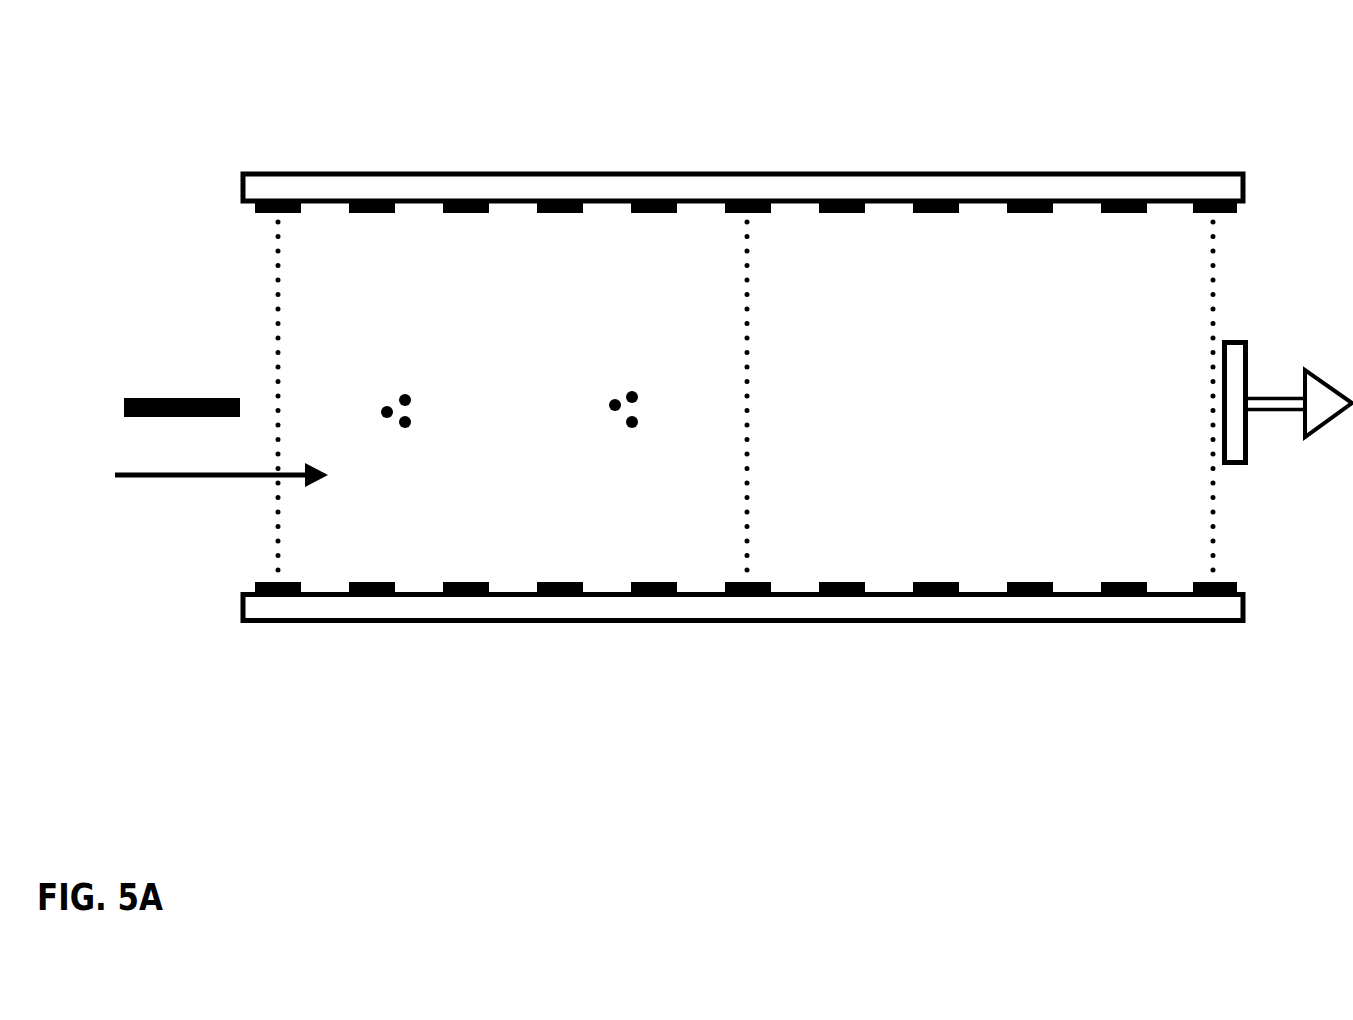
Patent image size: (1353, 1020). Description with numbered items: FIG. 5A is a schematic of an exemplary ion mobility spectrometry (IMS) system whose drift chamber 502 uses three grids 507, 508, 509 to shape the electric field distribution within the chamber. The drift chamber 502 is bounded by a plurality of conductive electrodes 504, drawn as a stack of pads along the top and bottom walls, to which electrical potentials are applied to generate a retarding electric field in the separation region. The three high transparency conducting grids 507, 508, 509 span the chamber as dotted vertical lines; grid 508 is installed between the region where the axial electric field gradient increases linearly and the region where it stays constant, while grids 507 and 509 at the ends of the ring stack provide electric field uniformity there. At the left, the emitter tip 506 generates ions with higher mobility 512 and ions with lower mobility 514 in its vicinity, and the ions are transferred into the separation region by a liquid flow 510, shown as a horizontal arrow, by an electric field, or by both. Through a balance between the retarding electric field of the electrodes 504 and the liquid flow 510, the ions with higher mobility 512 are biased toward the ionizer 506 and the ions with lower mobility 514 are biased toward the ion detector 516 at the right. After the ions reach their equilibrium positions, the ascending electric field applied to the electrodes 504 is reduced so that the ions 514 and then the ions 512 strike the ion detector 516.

The chamber plate 502 is at (605, 190).
The conductive electrodes 504 is at (933, 196).
The emitter tip 506 is at (183, 388).
The grid 507 is at (292, 235).
The grid 508 is at (762, 383).
The grid 509 is at (1228, 230).
The liquid flow 510 is at (182, 490).
The ions with higher mobility 512 is at (393, 390).
The ions with lower mobility 514 is at (621, 378).
The ion detector 516 is at (1258, 354).